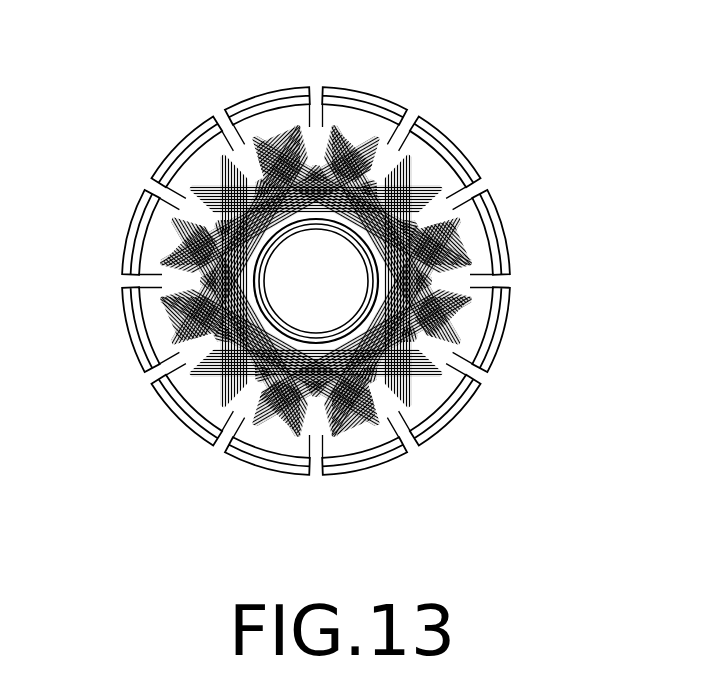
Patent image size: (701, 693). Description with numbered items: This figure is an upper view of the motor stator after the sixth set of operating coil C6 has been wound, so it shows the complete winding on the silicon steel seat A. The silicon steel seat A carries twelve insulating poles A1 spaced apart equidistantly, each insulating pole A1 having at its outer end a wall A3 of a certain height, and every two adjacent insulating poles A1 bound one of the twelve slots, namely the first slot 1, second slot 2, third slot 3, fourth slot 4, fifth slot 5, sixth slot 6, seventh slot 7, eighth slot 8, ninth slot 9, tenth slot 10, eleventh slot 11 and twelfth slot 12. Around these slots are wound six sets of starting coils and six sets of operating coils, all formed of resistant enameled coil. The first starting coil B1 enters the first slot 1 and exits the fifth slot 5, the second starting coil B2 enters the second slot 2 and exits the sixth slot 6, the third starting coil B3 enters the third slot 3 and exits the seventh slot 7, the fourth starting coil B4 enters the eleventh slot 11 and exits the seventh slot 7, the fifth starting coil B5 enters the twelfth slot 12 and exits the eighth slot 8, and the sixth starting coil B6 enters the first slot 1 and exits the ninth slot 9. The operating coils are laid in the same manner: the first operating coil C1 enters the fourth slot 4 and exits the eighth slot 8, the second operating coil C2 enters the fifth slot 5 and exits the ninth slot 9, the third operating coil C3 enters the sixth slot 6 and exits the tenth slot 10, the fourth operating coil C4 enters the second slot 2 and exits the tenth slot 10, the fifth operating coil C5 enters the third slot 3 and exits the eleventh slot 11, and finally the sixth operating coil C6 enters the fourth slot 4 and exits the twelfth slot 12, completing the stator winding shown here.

The first slot 1 is at (314, 438).
The second slot 2 is at (398, 430).
The third slot 3 is at (455, 362).
The fourth slot 4 is at (478, 277).
The fifth slot 5 is at (453, 198).
The sixth slot 6 is at (395, 140).
The seventh slot 7 is at (314, 125).
The eighth slot 8 is at (233, 140).
The ninth slot 9 is at (177, 200).
The tenth slot 10 is at (150, 283).
The eleventh slot 11 is at (172, 360).
The twelfth slot 12 is at (233, 425).
The silicon steel seat A is at (522, 248).
The insulating pole A1 is at (177, 205).
The wall A3 is at (193, 170).
The first set of starting coil B1 is at (336, 455).
The second starting coil B2 is at (420, 412).
The third set of starting coil B3 is at (452, 356).
The fourth set of starting coil B4 is at (168, 318).
The fifth set of starting coil B5 is at (195, 404).
The sixth set of starting coil B6 is at (284, 460).
The first set of operating coil C1 is at (433, 222).
The second set of operating coil C2 is at (452, 148).
The third set of operating coil C3 is at (352, 168).
The fourth set of operating coil C4 is at (360, 448).
The fifth operating coil C5 is at (455, 393).
The sixth set of operating coil C6 is at (455, 318).